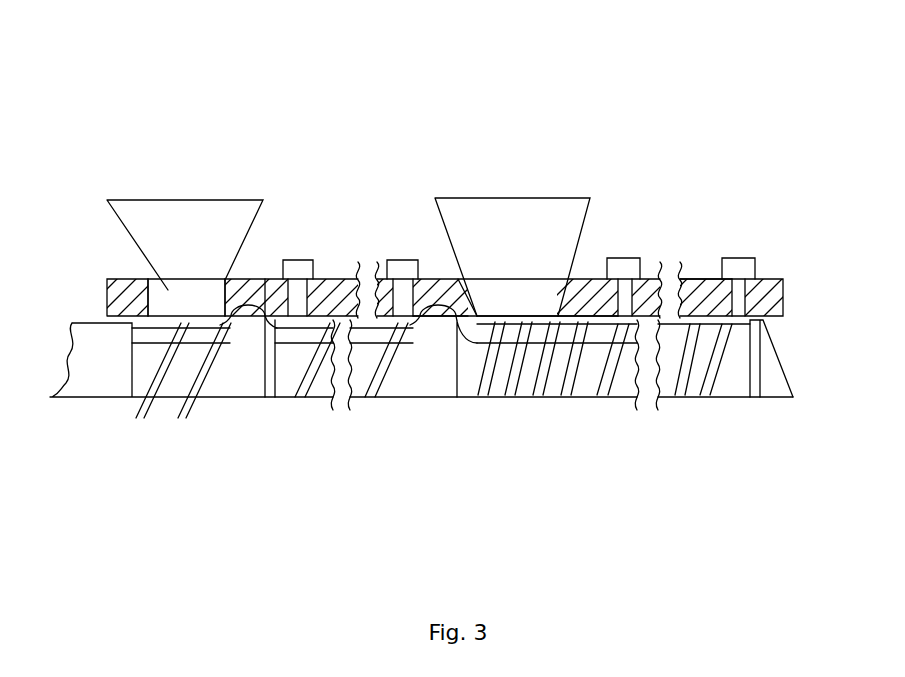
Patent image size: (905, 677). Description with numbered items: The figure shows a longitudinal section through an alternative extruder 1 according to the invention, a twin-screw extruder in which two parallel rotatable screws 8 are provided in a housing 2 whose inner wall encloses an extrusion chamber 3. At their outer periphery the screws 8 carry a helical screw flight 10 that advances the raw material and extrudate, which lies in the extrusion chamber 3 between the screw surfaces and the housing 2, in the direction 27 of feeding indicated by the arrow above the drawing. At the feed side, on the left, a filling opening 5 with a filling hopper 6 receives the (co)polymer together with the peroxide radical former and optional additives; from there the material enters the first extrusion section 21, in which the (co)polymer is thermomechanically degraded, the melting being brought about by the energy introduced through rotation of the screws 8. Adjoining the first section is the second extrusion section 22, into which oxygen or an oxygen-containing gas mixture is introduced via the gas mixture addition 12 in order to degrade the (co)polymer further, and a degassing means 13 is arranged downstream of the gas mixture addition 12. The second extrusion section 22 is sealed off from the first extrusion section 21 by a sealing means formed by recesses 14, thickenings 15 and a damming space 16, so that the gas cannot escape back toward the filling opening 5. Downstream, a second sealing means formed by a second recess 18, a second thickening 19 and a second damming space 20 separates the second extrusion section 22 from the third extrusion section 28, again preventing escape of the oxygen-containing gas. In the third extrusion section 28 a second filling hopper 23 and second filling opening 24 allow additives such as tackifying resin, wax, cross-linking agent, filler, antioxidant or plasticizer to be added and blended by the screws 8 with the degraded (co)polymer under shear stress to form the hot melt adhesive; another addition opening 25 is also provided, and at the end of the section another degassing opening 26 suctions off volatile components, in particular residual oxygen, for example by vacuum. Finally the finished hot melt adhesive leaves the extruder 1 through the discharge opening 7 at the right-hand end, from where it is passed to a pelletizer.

The extruder 1 is at (162, 86).
The housing 2 is at (107, 290).
The extrusion chamber 3 is at (150, 332).
The filling opening 5 is at (165, 290).
The filling hopper 6 is at (147, 220).
The discharge opening 7 is at (804, 356).
The screws 8 is at (568, 278).
The screw flight 10 is at (688, 279).
The gas mixture addition 12 is at (300, 292).
The degassing means 13 is at (405, 300).
The recesses 14 is at (248, 300).
The thickenings 15 is at (265, 279).
The damming space 16 is at (248, 330).
The second recess 18 is at (430, 292).
The second thickening 19 is at (452, 290).
The second damming space 20 is at (442, 330).
The first extrusion section 21 is at (205, 442).
The second extrusion section 22 is at (344, 443).
The second filling hopper 23 is at (533, 243).
The second filling opening 24 is at (498, 303).
The other addition opening 25 is at (626, 295).
The other degassing opening 26 is at (743, 295).
The direction of feeding 27 is at (358, 53).
The third extrusion section 28 is at (603, 443).